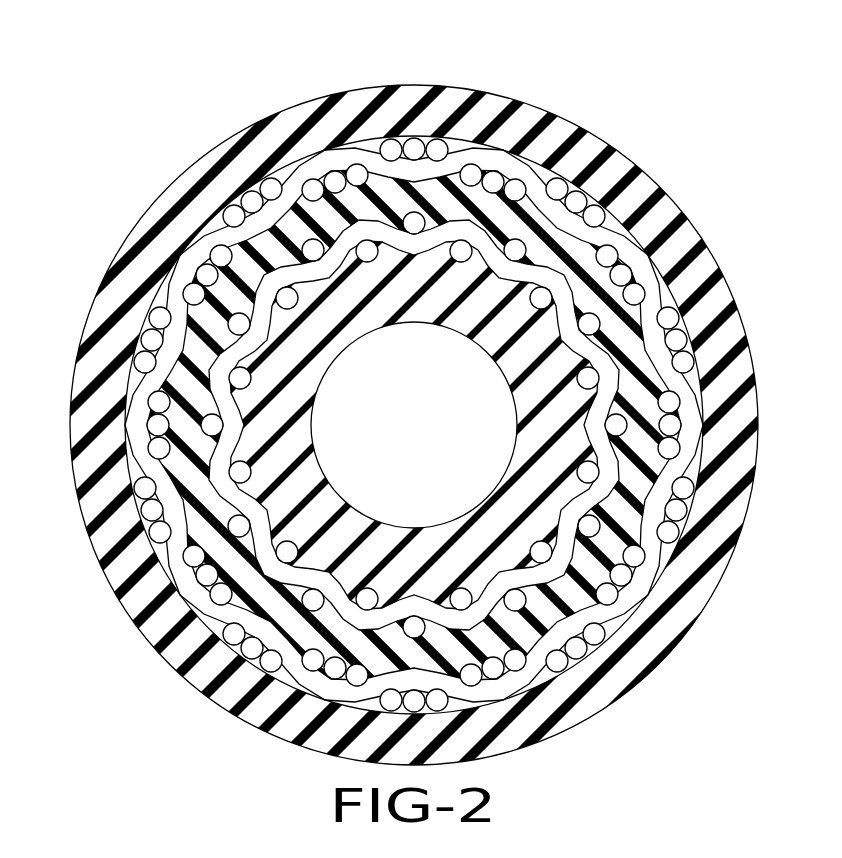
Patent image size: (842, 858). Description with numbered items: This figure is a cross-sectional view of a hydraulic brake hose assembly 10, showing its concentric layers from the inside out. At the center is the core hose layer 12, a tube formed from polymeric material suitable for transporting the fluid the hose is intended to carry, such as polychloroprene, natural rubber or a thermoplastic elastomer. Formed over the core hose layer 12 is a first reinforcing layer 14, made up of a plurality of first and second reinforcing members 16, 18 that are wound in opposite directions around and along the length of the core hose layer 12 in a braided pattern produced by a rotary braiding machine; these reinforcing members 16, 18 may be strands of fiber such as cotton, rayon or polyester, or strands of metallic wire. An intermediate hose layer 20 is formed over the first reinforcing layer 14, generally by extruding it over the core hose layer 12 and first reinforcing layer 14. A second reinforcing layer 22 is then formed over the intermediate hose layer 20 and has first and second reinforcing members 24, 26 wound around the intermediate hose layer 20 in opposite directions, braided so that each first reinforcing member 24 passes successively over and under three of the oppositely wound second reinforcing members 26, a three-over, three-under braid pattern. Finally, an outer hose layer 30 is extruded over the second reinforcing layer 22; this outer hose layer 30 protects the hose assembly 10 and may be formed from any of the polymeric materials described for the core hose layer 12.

The hydraulic brake hose assembly 10 is at (58, 114).
The core hose layer 12 is at (558, 413).
The first reinforcing layer 14 is at (468, 240).
The first reinforcing member 16 is at (365, 235).
The second reinforcing member 18 is at (313, 248).
The intermediate hose layer 20 is at (640, 490).
The second reinforcing layer 22 is at (592, 610).
The first reinforcing member 24 is at (155, 533).
The second reinforcing member 26 is at (645, 268).
The outer hose layer 30 is at (598, 155).